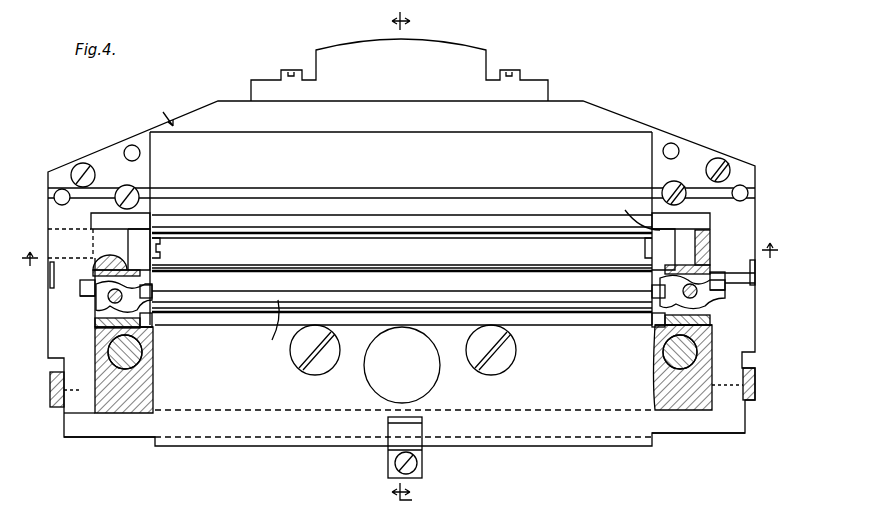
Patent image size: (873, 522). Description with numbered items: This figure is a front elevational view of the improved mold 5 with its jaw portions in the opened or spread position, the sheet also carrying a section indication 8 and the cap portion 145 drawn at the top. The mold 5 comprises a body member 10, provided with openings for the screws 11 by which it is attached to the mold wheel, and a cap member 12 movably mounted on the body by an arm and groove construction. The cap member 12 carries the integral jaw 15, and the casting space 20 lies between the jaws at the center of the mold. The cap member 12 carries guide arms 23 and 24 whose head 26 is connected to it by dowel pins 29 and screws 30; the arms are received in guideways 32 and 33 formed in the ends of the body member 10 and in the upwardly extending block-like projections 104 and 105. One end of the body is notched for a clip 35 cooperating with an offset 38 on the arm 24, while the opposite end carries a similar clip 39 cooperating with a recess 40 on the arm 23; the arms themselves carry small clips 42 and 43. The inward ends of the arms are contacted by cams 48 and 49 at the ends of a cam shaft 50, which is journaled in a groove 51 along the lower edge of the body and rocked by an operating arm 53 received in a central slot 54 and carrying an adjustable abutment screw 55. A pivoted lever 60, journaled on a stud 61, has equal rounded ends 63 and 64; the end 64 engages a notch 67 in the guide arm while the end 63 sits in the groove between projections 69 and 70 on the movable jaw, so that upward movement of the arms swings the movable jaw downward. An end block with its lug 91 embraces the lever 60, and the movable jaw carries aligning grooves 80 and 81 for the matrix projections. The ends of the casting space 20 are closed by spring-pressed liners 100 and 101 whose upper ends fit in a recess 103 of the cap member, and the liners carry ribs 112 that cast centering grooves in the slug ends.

The mold 5 is at (289, 255).
The section line 8 is at (397, 253).
The mold body 10 is at (270, 440).
The screws 11 is at (145, 350).
The cap member 12 is at (580, 135).
The jaw portion 15 is at (438, 220).
The casting space 20 is at (503, 255).
The guide arm 23 is at (62, 330).
The guide arm 24 is at (745, 323).
The head 26 is at (112, 147).
The dowel pins 29 is at (140, 153).
The screws 30 is at (93, 173).
The guideway 32 is at (87, 350).
The guideway 33 is at (720, 351).
The clip 35 is at (756, 390).
The offset 38 is at (757, 368).
The clip 39 is at (50, 391).
The recess 40 is at (52, 360).
The clip 42 is at (48, 276).
The clip 43 is at (752, 282).
The cam 48 is at (64, 428).
The cam 49 is at (747, 407).
The cam shaft 50 is at (690, 433).
The groove 51 is at (162, 411).
The operating arm 53 is at (422, 452).
The central slot 54 is at (388, 422).
The abutment element 55 is at (395, 464).
The pivoted lever 60 is at (116, 266).
The stud 61 is at (106, 297).
The lever end 63 is at (100, 321).
The lever end 64 is at (88, 292).
The notch 67 is at (80, 286).
The projection 69 is at (153, 292).
The projection 70 is at (153, 322).
The aligning groove 80 is at (248, 325).
The aligning groove 81 is at (269, 330).
The lug 91 is at (100, 330).
The liner 100 is at (142, 248).
The liner 101 is at (628, 214).
The recess 103 is at (90, 222).
The block-like projection 104 is at (70, 246).
The block-like projection 105 is at (708, 246).
The ribs 112 is at (158, 252).
The dome cap 145 is at (484, 60).